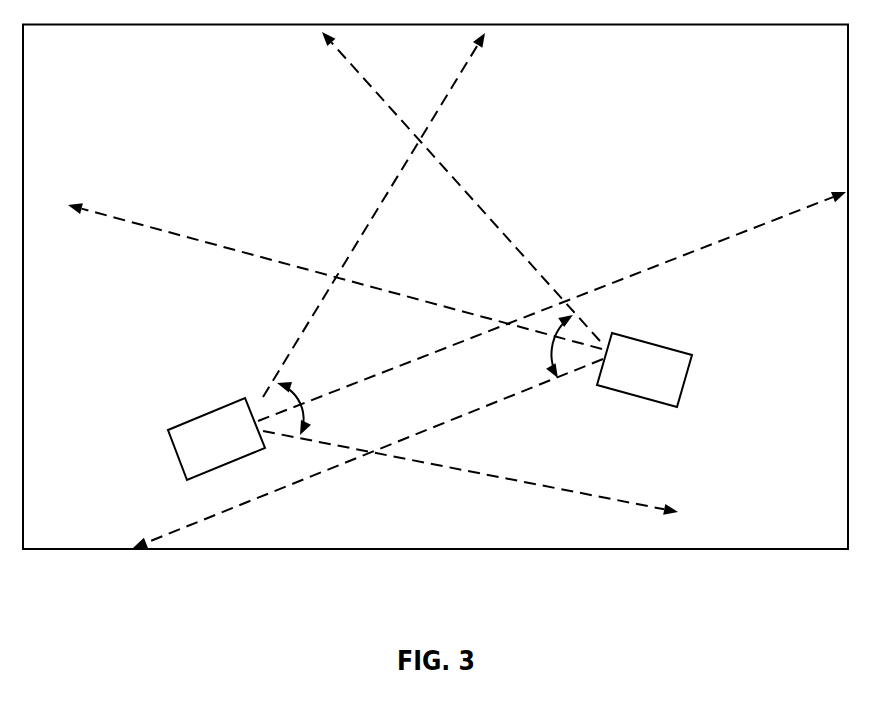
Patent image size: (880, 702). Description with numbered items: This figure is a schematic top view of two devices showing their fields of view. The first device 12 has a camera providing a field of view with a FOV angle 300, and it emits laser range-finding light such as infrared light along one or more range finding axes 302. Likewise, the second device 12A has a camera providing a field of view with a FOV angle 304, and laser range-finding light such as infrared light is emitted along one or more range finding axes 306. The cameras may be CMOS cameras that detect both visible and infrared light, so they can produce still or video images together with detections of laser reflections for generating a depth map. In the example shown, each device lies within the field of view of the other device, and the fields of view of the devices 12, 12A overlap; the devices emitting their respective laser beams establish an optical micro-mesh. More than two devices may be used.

The first device 12 is at (176, 454).
The second device 12A is at (687, 378).
The FOV angle 300 is at (292, 401).
The range finding axes 302 is at (802, 205).
The FOV angle 304 is at (558, 338).
The range finding axes 306 is at (148, 231).